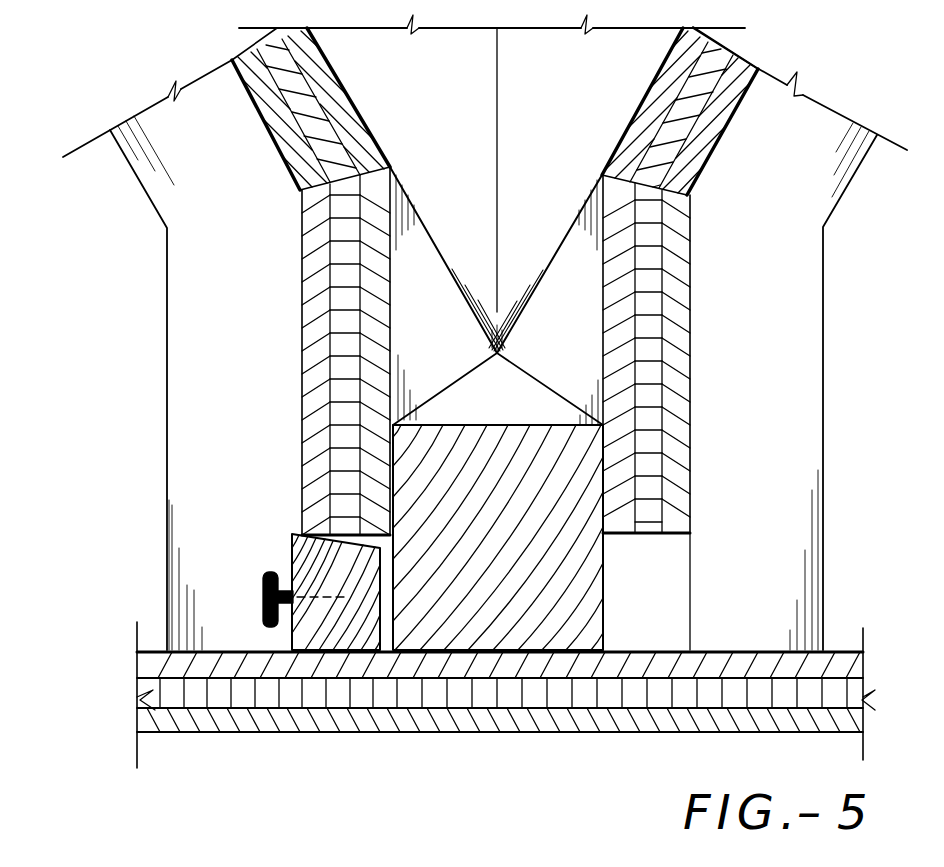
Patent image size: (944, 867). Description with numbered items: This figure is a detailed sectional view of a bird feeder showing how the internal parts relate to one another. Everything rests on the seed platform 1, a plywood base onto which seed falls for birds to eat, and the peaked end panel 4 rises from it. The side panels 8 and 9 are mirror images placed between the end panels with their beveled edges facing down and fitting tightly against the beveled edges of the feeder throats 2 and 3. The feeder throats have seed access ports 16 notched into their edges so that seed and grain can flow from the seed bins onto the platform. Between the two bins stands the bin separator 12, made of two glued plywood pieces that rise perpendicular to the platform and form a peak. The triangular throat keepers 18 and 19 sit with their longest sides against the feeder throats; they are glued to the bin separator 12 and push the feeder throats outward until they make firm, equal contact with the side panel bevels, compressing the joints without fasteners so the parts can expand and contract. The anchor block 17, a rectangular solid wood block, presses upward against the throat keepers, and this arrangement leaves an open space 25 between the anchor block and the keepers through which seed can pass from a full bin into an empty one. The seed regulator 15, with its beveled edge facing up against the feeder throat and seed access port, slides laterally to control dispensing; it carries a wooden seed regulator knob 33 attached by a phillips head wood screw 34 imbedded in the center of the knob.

The seed platform 1 is at (262, 736).
The feeder throat 2 is at (695, 287).
The feeder throat 3 is at (298, 287).
The end panel 4 is at (163, 252).
The side panel 8 is at (266, 138).
The side panel 9 is at (722, 143).
The bin separator 12 is at (530, 140).
The seed regulator 15 is at (290, 546).
The seed access port 16 is at (640, 590).
The anchor block 17 is at (560, 540).
The throat keeper 18 is at (568, 352).
The throat keeper 19 is at (425, 352).
The open space 25 is at (468, 402).
The seed regulator knob 33 is at (262, 611).
The phillips head wood screw 34 is at (258, 592).